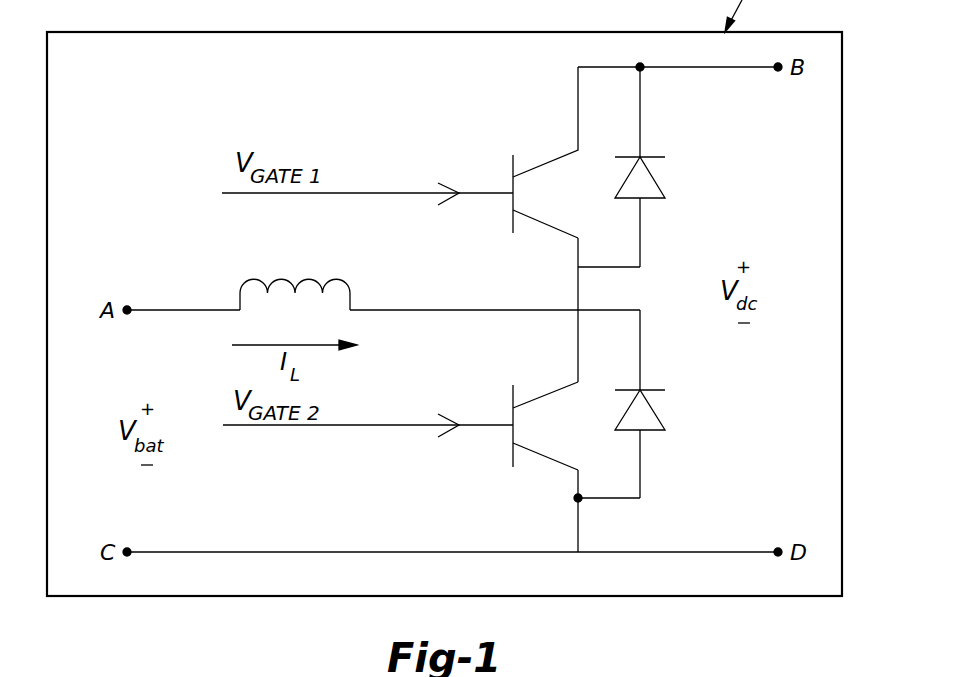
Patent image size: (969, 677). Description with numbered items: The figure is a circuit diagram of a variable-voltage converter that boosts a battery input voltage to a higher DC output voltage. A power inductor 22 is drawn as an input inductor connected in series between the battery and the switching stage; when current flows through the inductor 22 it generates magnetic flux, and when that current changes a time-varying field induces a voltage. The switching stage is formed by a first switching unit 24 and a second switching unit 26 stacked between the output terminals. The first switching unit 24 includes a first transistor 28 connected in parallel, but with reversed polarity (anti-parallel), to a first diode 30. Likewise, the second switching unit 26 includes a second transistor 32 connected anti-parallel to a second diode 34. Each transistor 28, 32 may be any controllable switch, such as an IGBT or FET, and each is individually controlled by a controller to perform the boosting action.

The power inductor 22 is at (253, 280).
The first switching unit 24 is at (496, 126).
The second switching unit 26 is at (494, 494).
The first transistor 28 is at (512, 223).
The first diode 30 is at (655, 200).
The second transistor 32 is at (512, 393).
The second diode 34 is at (655, 432).